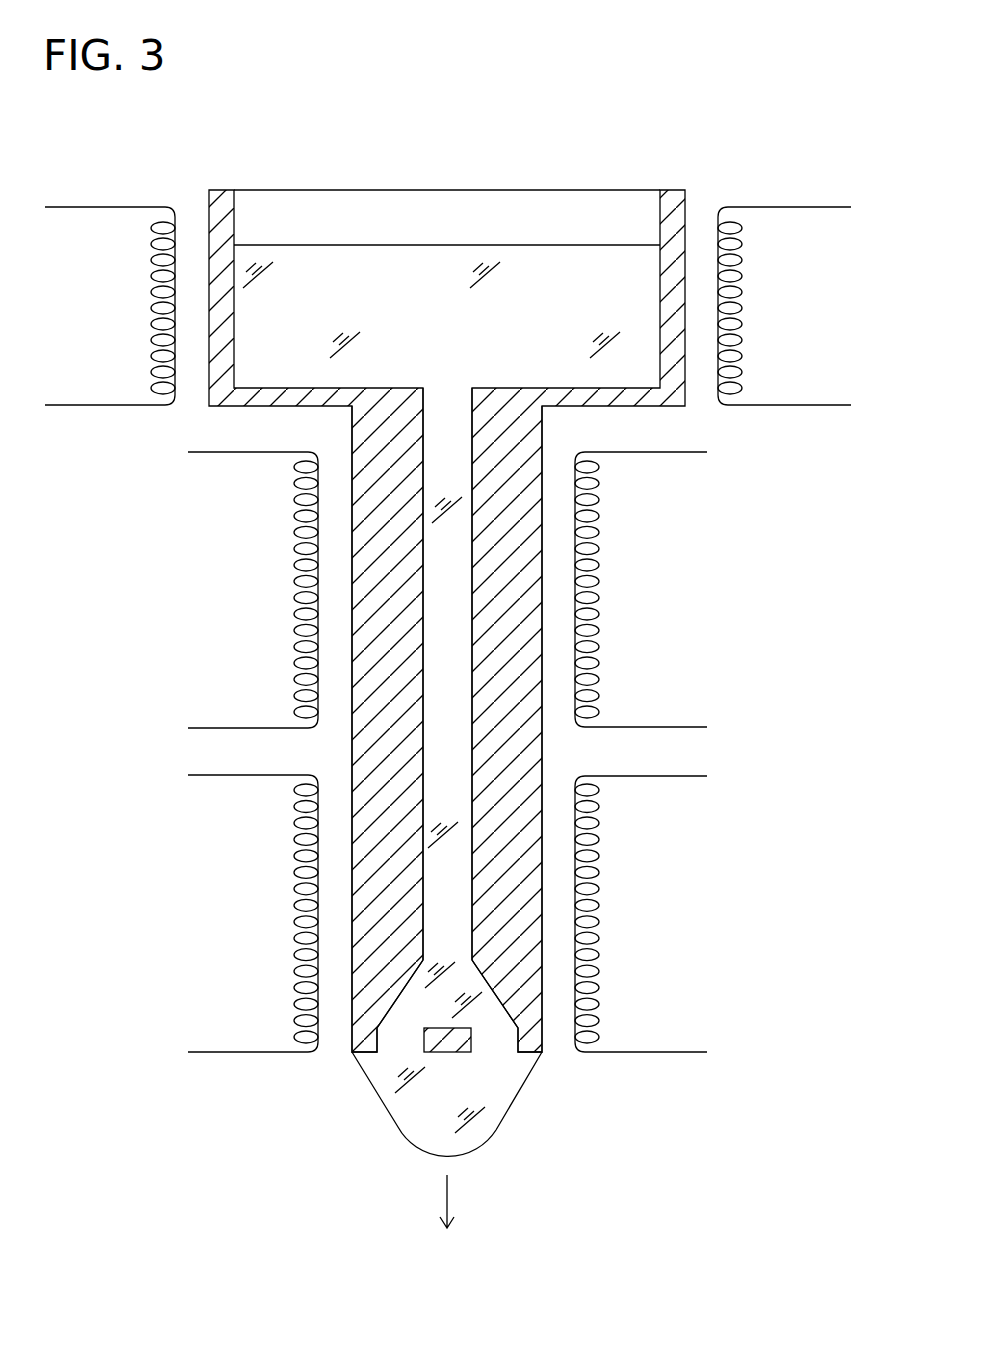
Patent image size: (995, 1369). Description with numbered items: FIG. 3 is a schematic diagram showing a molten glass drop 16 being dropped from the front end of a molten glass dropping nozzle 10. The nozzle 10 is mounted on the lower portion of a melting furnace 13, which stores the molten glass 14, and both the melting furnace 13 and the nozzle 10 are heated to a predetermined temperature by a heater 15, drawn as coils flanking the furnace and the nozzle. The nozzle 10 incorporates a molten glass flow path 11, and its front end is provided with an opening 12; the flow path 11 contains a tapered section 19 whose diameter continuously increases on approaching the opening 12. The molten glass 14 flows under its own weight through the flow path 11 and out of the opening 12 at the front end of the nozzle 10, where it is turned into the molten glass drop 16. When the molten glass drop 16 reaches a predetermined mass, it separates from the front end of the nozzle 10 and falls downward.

The molten glass dropping nozzle 10 is at (510, 850).
The molten glass flow path 11 is at (448, 760).
The opening 12 is at (497, 1048).
The melting furnace 13 is at (233, 210).
The molten glass 14 is at (428, 267).
The heater 15 is at (98, 235).
The molten glass drop 16 is at (410, 1115).
The tapered section 19 is at (397, 1000).